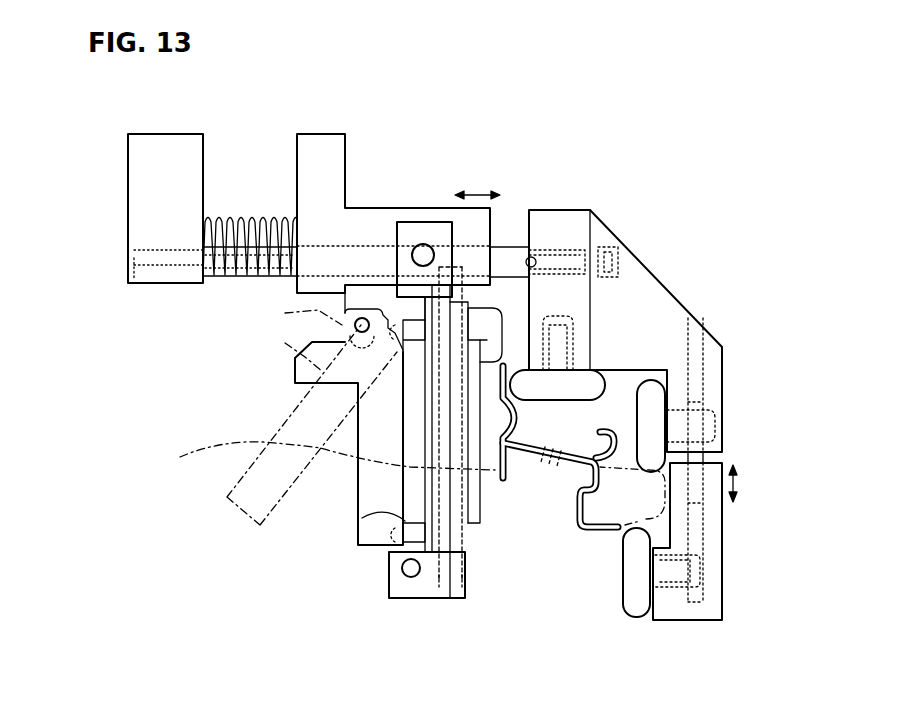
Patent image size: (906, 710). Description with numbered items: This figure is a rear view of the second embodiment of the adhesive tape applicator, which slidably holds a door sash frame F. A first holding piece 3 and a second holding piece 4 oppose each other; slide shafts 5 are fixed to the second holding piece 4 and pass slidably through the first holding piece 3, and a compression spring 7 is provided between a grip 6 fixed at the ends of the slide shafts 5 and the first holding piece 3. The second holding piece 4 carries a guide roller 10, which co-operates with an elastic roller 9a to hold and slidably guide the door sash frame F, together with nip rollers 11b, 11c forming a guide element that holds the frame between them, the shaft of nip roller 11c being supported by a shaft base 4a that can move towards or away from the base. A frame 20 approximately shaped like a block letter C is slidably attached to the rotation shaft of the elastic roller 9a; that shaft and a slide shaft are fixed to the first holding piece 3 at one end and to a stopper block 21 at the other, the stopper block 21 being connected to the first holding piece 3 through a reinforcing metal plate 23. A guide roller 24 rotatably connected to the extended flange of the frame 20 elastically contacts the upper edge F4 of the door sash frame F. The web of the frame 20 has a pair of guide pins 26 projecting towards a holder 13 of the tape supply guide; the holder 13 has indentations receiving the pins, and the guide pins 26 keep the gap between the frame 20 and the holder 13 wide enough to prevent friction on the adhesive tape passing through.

The first holding piece 3 is at (389, 204).
The second holding piece 4 is at (665, 285).
The shaft base 4a is at (722, 560).
The slide shaft 5 is at (503, 247).
The grip 6 is at (126, 187).
The compression spring 7 is at (233, 212).
The elastic roller 9a is at (482, 502).
The guide roller 10 is at (590, 387).
The nip roller 11b is at (655, 402).
The nip roller 11c is at (637, 542).
The holder 13 is at (360, 482).
The frame 20 is at (470, 543).
The stopper block 21 is at (475, 597).
The reinforcing metal plate 23 is at (390, 580).
The guide roller 24 is at (490, 322).
The guide pin 26 is at (405, 347).
The door sash frame F is at (323, 458).
The upper edge F4 is at (500, 350).